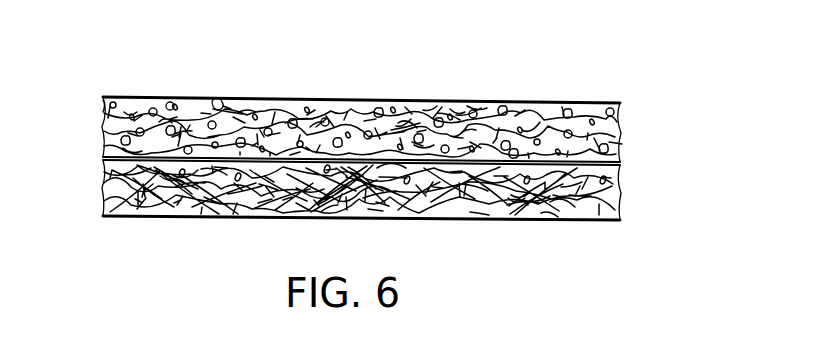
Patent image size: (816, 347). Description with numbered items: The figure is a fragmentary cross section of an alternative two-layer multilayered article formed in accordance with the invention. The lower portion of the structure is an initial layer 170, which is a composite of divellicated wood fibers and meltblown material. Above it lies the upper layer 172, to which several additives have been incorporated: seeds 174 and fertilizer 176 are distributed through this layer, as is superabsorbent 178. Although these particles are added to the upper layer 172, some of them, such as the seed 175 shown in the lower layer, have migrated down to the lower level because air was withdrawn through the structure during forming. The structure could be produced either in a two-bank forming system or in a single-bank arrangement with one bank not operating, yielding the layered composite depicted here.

The initial layer 170 is at (620, 191).
The upper layer 172 is at (620, 134).
The seeds 174 is at (168, 103).
The seed 175 is at (168, 172).
The fertilizer 176 is at (107, 108).
The superabsorbent 178 is at (218, 104).